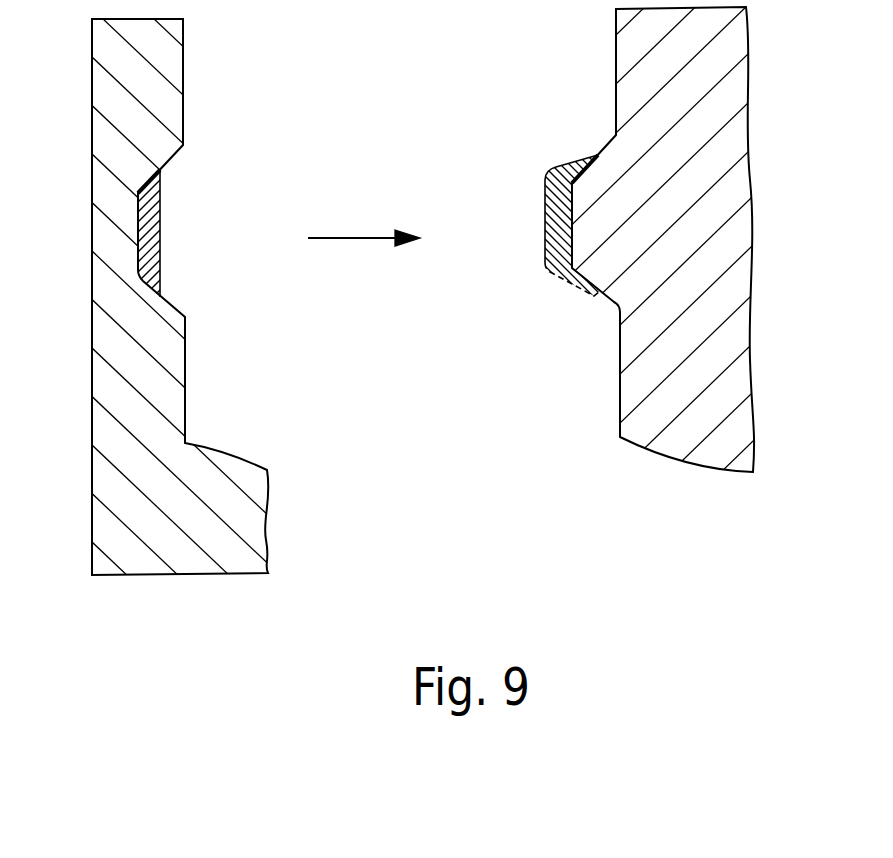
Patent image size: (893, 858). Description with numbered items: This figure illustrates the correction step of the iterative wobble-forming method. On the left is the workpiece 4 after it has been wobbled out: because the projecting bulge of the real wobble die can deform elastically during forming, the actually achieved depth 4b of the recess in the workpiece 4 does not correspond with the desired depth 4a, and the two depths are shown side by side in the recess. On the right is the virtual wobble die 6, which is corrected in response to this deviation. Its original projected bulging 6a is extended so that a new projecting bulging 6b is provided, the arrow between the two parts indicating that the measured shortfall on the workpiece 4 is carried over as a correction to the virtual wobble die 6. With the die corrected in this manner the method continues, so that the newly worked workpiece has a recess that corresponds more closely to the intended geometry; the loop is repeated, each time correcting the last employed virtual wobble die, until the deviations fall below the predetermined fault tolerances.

The workpiece 4 is at (100, 84).
The desired depth 4a is at (138, 248).
The actually achieved depth 4b is at (165, 197).
The virtual wobble die 6 is at (712, 100).
The projected bulging 6a is at (565, 255).
The new projecting bulging 6b is at (545, 193).